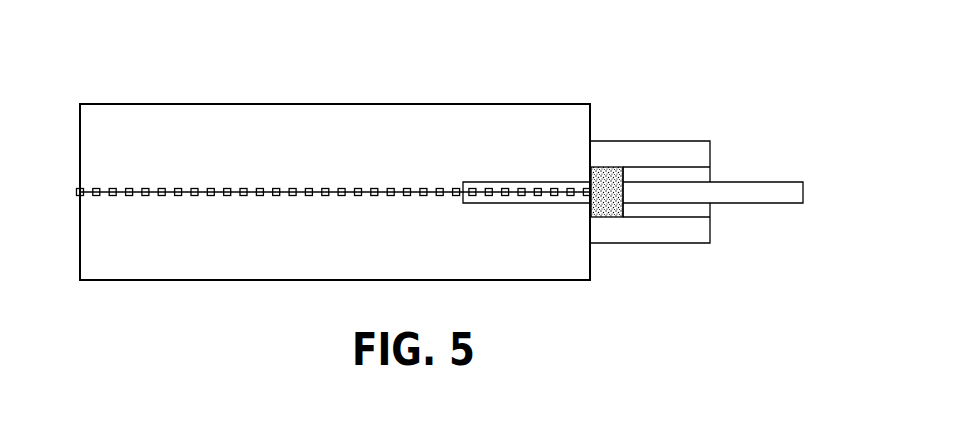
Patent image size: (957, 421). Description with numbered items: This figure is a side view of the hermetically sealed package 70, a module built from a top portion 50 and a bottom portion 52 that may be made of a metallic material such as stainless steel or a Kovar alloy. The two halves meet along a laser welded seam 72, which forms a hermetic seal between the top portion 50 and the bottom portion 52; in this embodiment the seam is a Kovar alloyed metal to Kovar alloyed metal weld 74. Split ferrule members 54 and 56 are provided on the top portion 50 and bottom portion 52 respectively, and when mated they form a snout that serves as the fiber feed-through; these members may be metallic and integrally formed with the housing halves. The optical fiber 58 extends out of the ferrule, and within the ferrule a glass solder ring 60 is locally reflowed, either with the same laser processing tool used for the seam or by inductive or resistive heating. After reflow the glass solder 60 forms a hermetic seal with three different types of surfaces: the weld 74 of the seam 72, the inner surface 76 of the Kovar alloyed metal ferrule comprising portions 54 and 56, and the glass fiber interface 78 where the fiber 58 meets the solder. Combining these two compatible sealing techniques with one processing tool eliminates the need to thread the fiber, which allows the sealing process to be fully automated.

The hermetically sealed package 70 is at (647, 41).
The top portion 50 is at (79, 149).
The bottom portion 52 is at (79, 242).
The laser welded seam 72 is at (137, 189).
The metal-metal weld 74 is at (589, 212).
The inner surface of the ferrule 76 is at (601, 166).
The glass fiber interface 78 is at (623, 180).
The split ferrule member 54 is at (682, 141).
The split ferrule member 56 is at (642, 245).
The glass solder ring 60 is at (603, 218).
The rod 58 is at (770, 182).